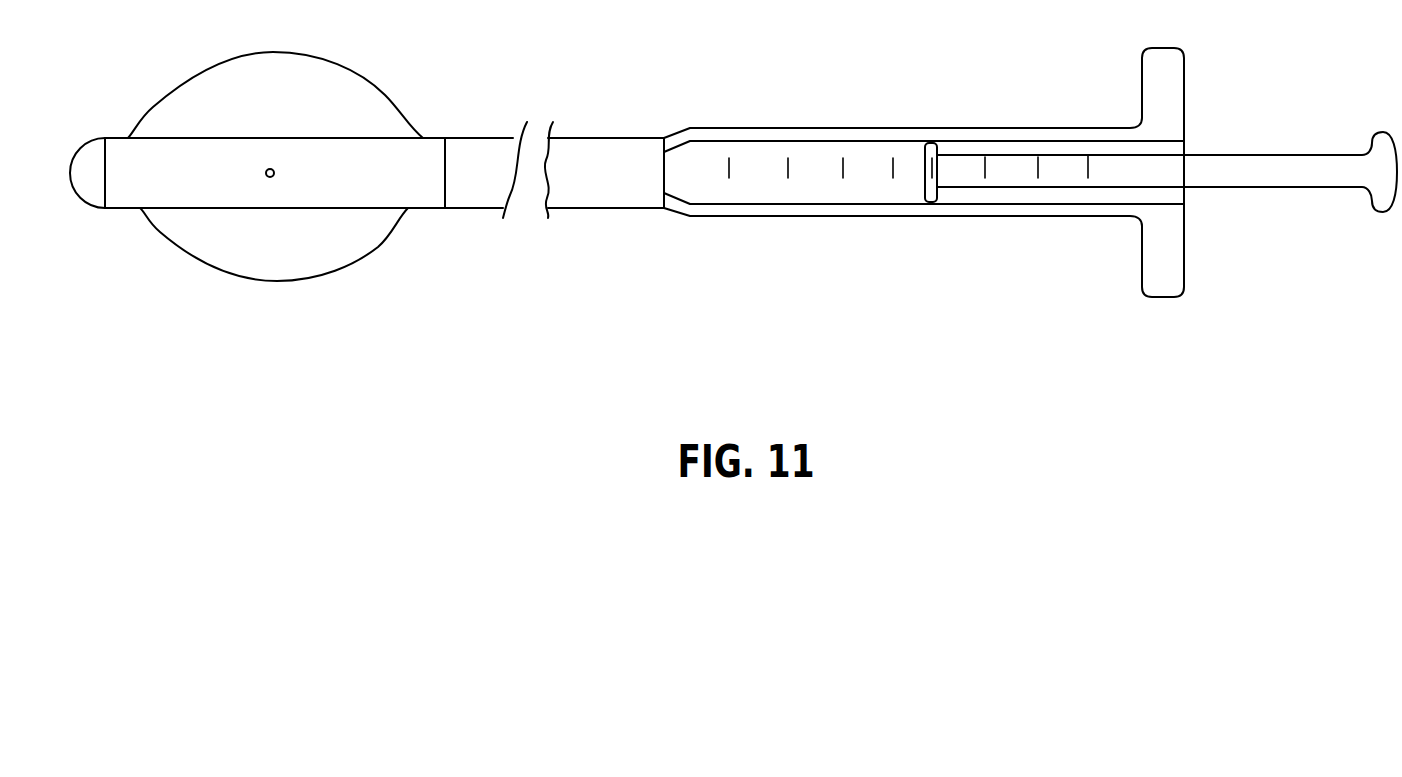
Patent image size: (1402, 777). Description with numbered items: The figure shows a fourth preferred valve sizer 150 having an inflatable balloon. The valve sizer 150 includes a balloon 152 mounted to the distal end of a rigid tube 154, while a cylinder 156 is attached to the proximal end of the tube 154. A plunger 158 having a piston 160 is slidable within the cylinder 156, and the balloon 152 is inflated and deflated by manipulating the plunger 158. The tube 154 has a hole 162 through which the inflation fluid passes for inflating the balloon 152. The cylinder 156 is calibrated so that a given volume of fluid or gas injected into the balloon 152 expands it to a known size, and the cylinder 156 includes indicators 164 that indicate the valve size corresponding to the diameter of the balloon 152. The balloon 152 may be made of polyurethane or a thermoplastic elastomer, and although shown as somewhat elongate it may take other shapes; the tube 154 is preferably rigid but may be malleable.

The valve sizer 150 is at (781, 66).
The balloon 152 is at (298, 66).
The tube 154 is at (482, 200).
The cylinder 156 is at (867, 213).
The plunger 158 is at (1248, 177).
The piston 160 is at (926, 154).
The hole 162 is at (275, 171).
The indicators 164 is at (725, 200).